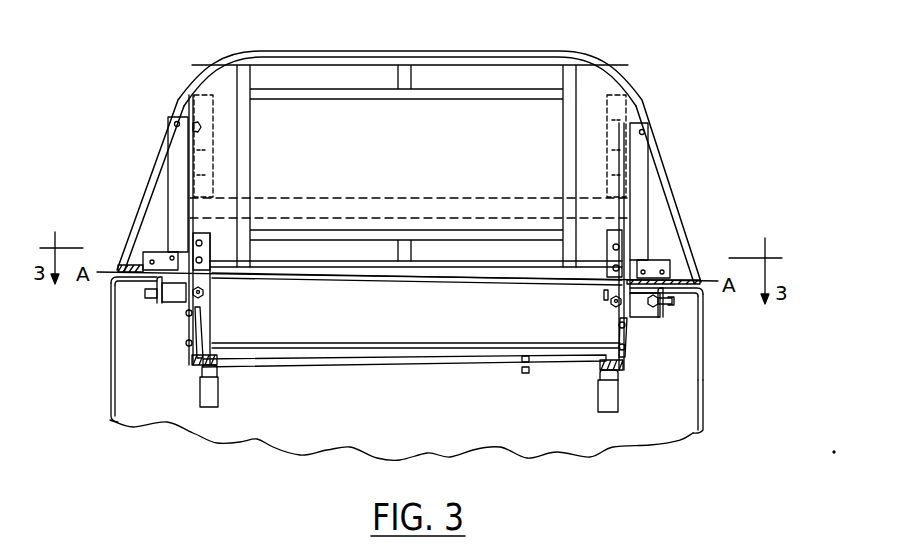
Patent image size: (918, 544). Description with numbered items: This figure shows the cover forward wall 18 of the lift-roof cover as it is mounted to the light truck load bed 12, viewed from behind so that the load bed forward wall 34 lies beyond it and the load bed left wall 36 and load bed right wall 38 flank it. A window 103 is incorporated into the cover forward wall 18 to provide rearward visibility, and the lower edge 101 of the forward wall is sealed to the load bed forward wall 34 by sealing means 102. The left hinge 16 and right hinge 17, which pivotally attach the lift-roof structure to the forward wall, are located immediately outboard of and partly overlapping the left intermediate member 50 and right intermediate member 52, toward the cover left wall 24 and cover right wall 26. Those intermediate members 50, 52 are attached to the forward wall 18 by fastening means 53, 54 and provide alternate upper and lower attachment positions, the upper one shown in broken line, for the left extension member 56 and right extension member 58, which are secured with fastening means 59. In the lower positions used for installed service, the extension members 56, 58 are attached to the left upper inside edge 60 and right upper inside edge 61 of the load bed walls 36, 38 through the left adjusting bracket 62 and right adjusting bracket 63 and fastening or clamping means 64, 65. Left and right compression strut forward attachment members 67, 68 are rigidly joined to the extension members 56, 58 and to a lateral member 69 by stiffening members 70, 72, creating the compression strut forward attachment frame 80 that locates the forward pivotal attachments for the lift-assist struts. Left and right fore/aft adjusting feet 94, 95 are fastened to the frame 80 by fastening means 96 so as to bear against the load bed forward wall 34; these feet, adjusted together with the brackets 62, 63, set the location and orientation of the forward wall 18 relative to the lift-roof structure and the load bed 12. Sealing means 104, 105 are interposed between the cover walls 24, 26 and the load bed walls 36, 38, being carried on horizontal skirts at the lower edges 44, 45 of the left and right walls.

The load bed 12 is at (705, 393).
The left hinge 16 is at (160, 254).
The right hinge 17 is at (668, 266).
The cover forward wall 18 is at (200, 72).
The cover left wall 24 is at (168, 117).
The cover right wall 26 is at (663, 147).
The load bed forward wall 34 is at (369, 427).
The load bed left wall 36 is at (108, 397).
The load bed right wall 38 is at (705, 412).
The lower edge of left wall 44 is at (118, 260).
The lower edge of right wall 45 is at (703, 276).
The left intermediate member 50 is at (167, 252).
The right intermediate member 52 is at (645, 145).
The fastening means 53 is at (177, 103).
The fastening means 54 is at (170, 195).
The left extension member 56 is at (216, 96).
The right extension member 58 is at (610, 300).
The fastening means 59 is at (210, 238).
The left upper inside edge 60 is at (114, 366).
The right upper inside edge 61 is at (660, 305).
The left adjusting bracket 62 is at (180, 297).
The right adjusting bracket 63 is at (643, 317).
The fastening or clamping means 64 is at (147, 297).
The fastening or clamping means 65 is at (208, 296).
The left compression strut means forward attachment member 67 is at (190, 364).
The right compression strut means forward attachment member 68 is at (624, 368).
The lateral member 69 is at (316, 195).
The stiffening member 70 is at (207, 330).
The stiffening member 72 is at (263, 359).
The compression strut means forward attachment frame 80 is at (413, 358).
The left fore/aft adjusting foot 94 is at (210, 407).
The right fore/aft adjusting foot 95 is at (597, 412).
The fastening means 96 is at (218, 387).
The lower edge of cover forward wall 101 is at (416, 262).
The sealing means 102 is at (368, 276).
The window 103 is at (436, 122).
The sealing means 104 is at (113, 275).
The sealing means 105 is at (713, 280).